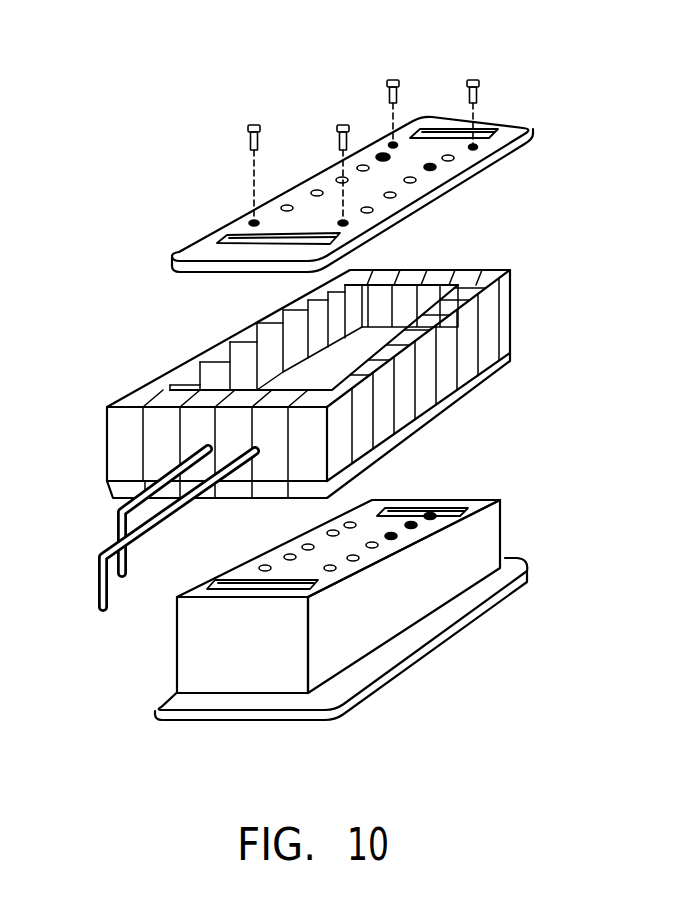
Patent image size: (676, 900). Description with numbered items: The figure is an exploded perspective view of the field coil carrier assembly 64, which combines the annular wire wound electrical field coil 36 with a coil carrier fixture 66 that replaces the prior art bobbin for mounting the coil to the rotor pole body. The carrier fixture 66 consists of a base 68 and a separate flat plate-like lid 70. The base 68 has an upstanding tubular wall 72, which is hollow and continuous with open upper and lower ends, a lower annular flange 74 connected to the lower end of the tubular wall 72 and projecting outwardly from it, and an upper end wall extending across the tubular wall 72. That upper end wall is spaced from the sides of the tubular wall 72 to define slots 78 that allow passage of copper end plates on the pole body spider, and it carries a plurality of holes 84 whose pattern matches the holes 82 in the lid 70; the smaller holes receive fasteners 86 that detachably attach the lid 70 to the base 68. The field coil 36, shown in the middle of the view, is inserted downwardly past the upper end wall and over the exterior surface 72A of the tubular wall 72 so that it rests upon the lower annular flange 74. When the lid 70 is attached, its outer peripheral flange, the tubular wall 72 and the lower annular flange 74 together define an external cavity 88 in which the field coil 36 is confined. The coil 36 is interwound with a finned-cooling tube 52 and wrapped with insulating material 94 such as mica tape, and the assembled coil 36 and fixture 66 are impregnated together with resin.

The annular wire wound electrical field coil 36 is at (362, 345).
The finned-cooling tube 52 is at (107, 548).
The field coil carrier assembly 64 is at (389, 345).
The coil carrier fixture 66 is at (413, 597).
The base 68 is at (386, 641).
The lid 70 is at (537, 112).
The tubular wall 72 is at (397, 607).
The exterior surface of the tubular wall 72A is at (385, 628).
The lower annular flange 74 is at (522, 568).
The slots 78 is at (481, 127).
The holes 82 is at (383, 154).
The holes 84 is at (353, 556).
The fasteners 86 is at (343, 122).
The external cavity 88 is at (305, 658).
The insulating material 94 is at (512, 318).